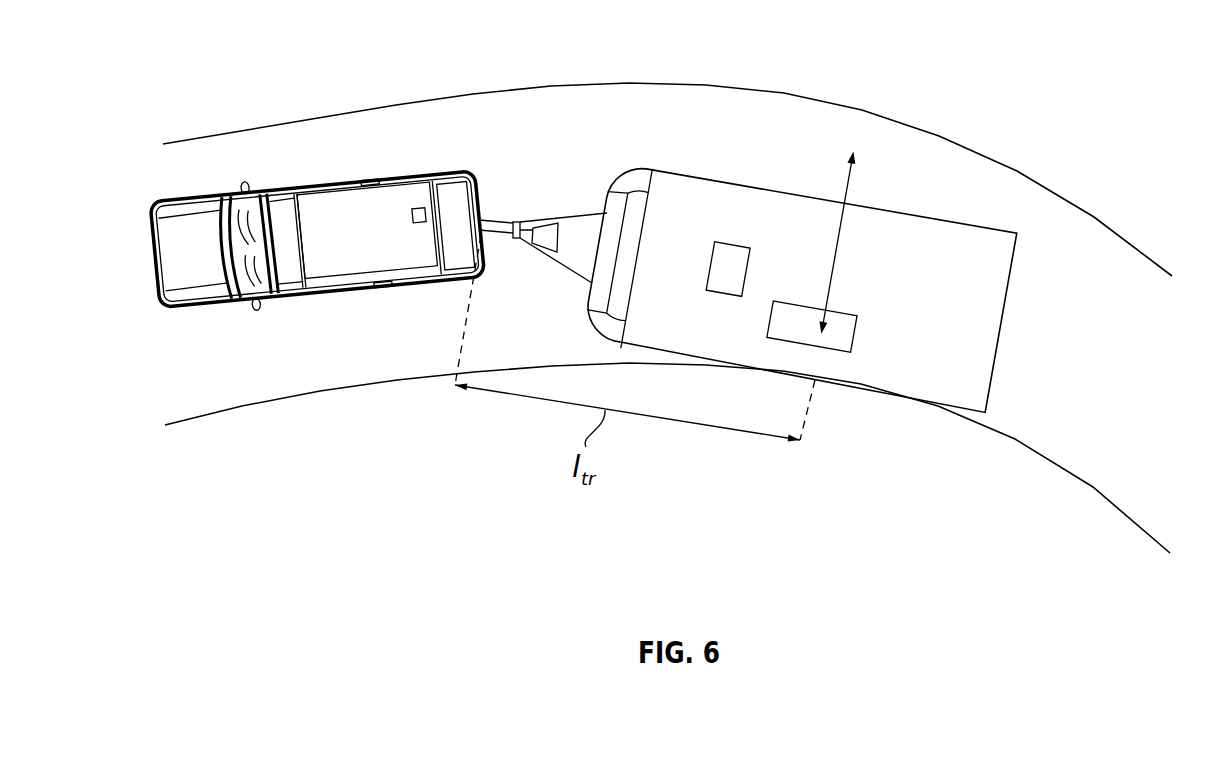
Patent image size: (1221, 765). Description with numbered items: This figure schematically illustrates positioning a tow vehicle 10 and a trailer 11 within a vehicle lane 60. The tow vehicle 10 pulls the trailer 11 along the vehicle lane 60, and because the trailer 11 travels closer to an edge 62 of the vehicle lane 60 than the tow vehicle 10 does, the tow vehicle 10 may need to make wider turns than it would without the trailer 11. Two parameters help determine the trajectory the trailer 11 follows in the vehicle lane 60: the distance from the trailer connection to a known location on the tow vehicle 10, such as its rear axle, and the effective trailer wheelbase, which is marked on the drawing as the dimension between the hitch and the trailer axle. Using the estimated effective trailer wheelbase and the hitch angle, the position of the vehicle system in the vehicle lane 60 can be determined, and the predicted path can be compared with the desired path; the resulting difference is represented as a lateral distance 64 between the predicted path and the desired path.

The tow vehicle 10 is at (292, 189).
The trailer 11 is at (688, 200).
The vehicle lane 60 is at (679, 318).
The edge 62 is at (1128, 240).
The lateral distance 64 is at (852, 192).